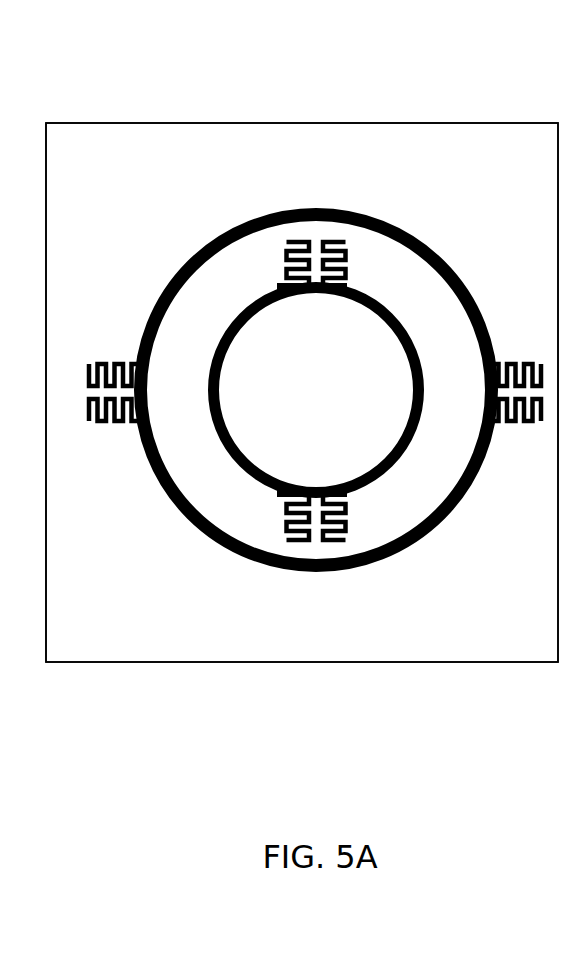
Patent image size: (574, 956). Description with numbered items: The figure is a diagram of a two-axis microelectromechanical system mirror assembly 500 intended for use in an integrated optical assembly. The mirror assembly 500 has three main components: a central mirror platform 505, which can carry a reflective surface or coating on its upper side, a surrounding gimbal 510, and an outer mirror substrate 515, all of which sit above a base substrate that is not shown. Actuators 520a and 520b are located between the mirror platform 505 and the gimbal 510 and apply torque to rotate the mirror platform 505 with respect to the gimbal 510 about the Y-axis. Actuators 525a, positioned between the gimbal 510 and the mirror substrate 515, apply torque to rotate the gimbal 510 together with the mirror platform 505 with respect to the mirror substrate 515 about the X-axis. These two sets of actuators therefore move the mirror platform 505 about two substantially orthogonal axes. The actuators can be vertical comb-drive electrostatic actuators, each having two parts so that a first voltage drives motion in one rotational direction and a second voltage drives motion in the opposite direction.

The mirror assembly 500 is at (160, 66).
The mirror platform 505 is at (316, 390).
The gimbal 510 is at (316, 390).
The mirror substrate 515 is at (302, 392).
The actuator 520a is at (279, 262).
The actuator 520b is at (279, 520).
The actuator 525a is at (513, 358).